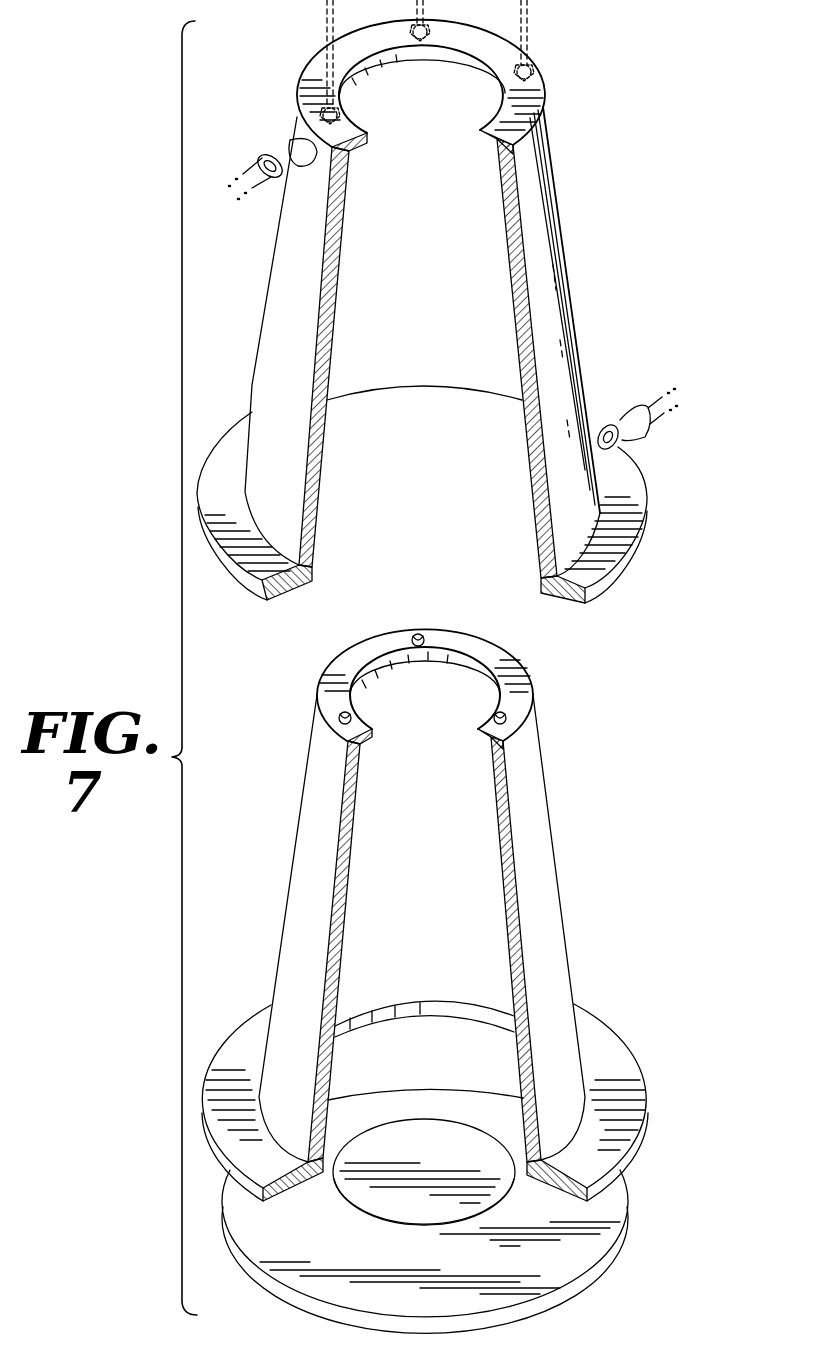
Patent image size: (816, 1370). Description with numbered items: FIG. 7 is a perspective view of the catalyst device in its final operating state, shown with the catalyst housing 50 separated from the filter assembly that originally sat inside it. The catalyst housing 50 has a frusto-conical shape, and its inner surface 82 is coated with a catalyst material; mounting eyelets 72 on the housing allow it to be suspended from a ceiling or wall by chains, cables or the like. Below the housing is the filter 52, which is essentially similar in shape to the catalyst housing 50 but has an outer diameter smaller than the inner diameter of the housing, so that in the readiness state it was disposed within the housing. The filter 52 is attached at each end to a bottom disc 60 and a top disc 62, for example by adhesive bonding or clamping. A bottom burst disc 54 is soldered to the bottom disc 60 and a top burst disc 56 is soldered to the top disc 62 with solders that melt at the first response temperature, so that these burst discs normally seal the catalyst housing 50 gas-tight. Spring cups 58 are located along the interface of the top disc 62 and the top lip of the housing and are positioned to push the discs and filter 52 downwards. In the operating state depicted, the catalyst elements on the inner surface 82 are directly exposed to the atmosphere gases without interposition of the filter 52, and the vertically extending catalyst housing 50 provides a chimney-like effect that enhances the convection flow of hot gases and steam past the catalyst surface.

The catalyst housing 50 is at (567, 235).
The mounting eyelets 72 is at (340, 110).
The inner surface 82 is at (328, 503).
The filter 52 is at (540, 803).
The spring cups 58 is at (413, 632).
The top disc 62 is at (370, 740).
The bottom disc 60 is at (656, 1109).
The top burst disc 56 is at (450, 1147).
The bottom burst disc 54 is at (583, 1260).